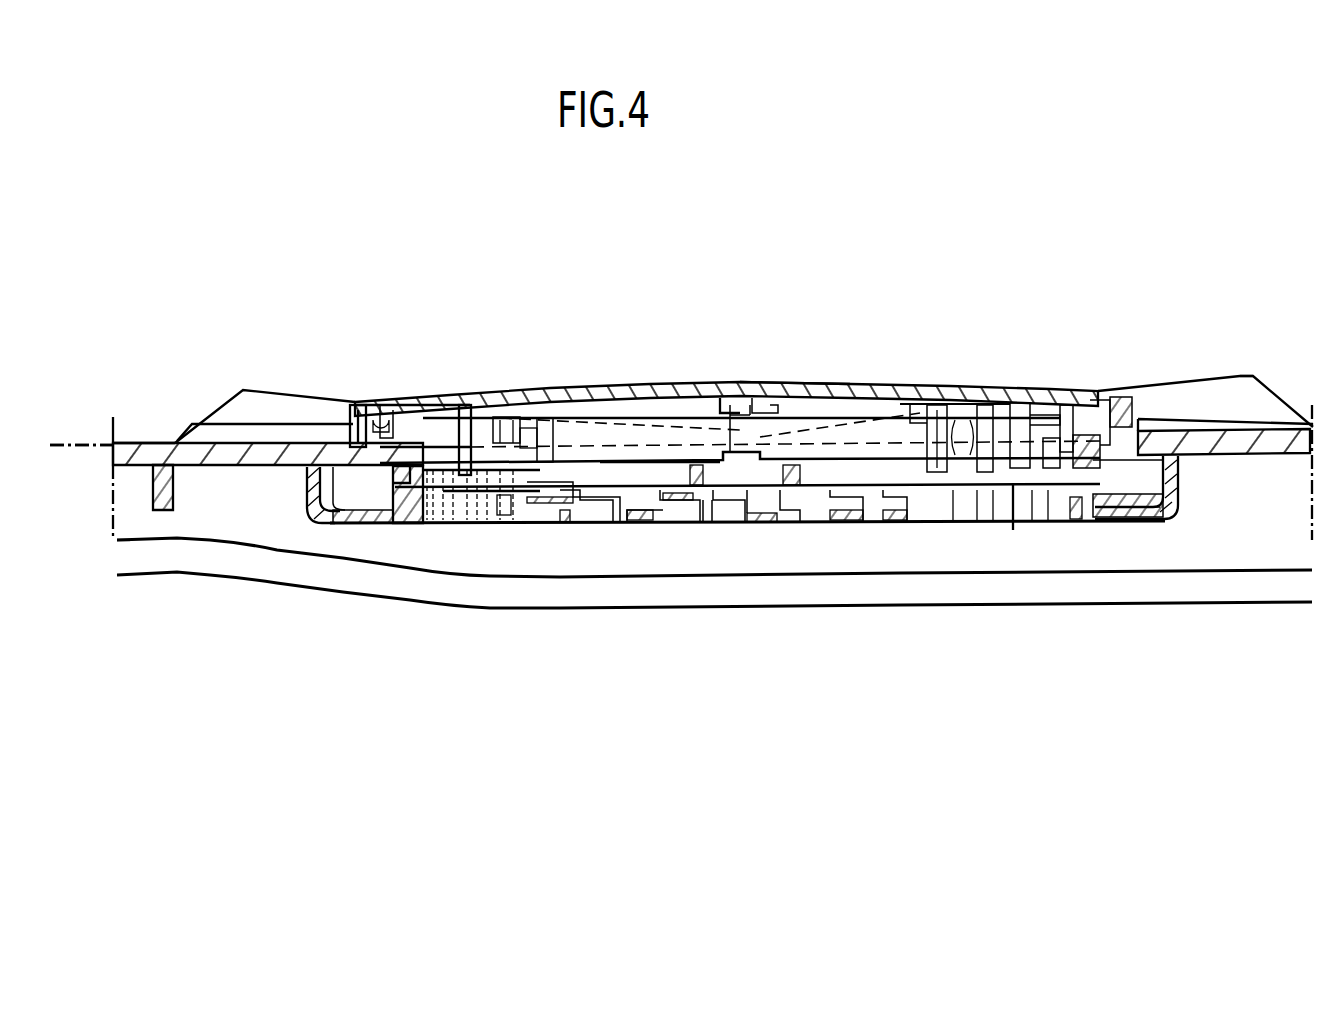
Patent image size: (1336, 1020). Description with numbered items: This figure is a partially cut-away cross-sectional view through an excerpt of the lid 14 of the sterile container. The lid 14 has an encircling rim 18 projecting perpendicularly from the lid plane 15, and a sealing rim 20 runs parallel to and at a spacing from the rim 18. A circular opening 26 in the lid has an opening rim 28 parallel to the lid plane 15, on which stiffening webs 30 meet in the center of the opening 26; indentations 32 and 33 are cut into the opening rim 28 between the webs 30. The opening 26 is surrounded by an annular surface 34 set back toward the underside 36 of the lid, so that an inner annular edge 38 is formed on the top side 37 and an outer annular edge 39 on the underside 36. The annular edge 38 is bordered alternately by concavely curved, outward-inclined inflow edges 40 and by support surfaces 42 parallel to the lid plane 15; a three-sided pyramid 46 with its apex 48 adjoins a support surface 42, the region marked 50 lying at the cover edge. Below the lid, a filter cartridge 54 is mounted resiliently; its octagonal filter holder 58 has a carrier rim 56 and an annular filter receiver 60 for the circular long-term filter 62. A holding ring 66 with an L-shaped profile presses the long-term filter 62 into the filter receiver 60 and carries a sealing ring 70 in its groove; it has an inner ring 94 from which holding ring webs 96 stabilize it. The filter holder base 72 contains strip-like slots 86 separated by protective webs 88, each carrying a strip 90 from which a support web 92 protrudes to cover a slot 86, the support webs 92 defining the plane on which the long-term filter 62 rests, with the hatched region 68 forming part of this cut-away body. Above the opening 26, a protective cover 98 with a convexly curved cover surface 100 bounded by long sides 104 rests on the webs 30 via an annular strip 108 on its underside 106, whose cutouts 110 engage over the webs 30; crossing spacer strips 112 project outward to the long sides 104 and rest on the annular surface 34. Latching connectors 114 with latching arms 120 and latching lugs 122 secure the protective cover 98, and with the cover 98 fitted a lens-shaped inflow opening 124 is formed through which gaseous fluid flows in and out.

The lid 14 is at (145, 411).
The lid plane 15 is at (74, 443).
The encircling rim 18 is at (1000, 605).
The sealing rim 20 is at (1033, 574).
The circular opening 26 is at (476, 430).
The opening rim 28 is at (452, 480).
The web 30 is at (753, 500).
The indentation 32 is at (935, 470).
The indentation 33 is at (979, 470).
The annular surface 34 is at (1105, 455).
The underside of the lid 36 is at (223, 527).
The top side of the lid 37 is at (292, 374).
The inner annular edge 38 is at (353, 406).
The outer annular edge 39 is at (333, 523).
The inflow edge 40 is at (234, 443).
The support surface 42 is at (198, 440).
The three-sided pyramid 46 is at (1266, 355).
The apex of the pyramid 48 is at (1254, 377).
The cap region 50 is at (1235, 365).
The filter cartridge 54 is at (1133, 532).
The carrier rim 56 is at (1180, 468).
The filter holder 58 is at (387, 520).
The filter receiver 60 is at (1055, 515).
The long-term filter 62 is at (843, 500).
The holding ring 66 is at (1178, 499).
The hatched block 68 is at (400, 470).
The sealing ring 70 is at (1078, 478).
The filter holder base 72 is at (1092, 519).
The slot 86 is at (677, 520).
The protective web 88 is at (612, 527).
The strip 90 is at (887, 500).
The support web 92 is at (902, 510).
The inner ring 94 is at (697, 470).
The holding ring web 96 is at (627, 470).
The protective cover 98 is at (890, 376).
The cover surface 100 is at (831, 396).
The long side 104 is at (1140, 393).
The underside of the protective cover 106 is at (770, 455).
The annular strip 108 is at (470, 480).
The cutout 110 is at (733, 500).
The spacer strip 112 is at (743, 460).
The latching connector 114 is at (583, 430).
The latching arm 120 is at (542, 500).
The latching lug 122 is at (510, 500).
The inflow opening 124 is at (403, 495).